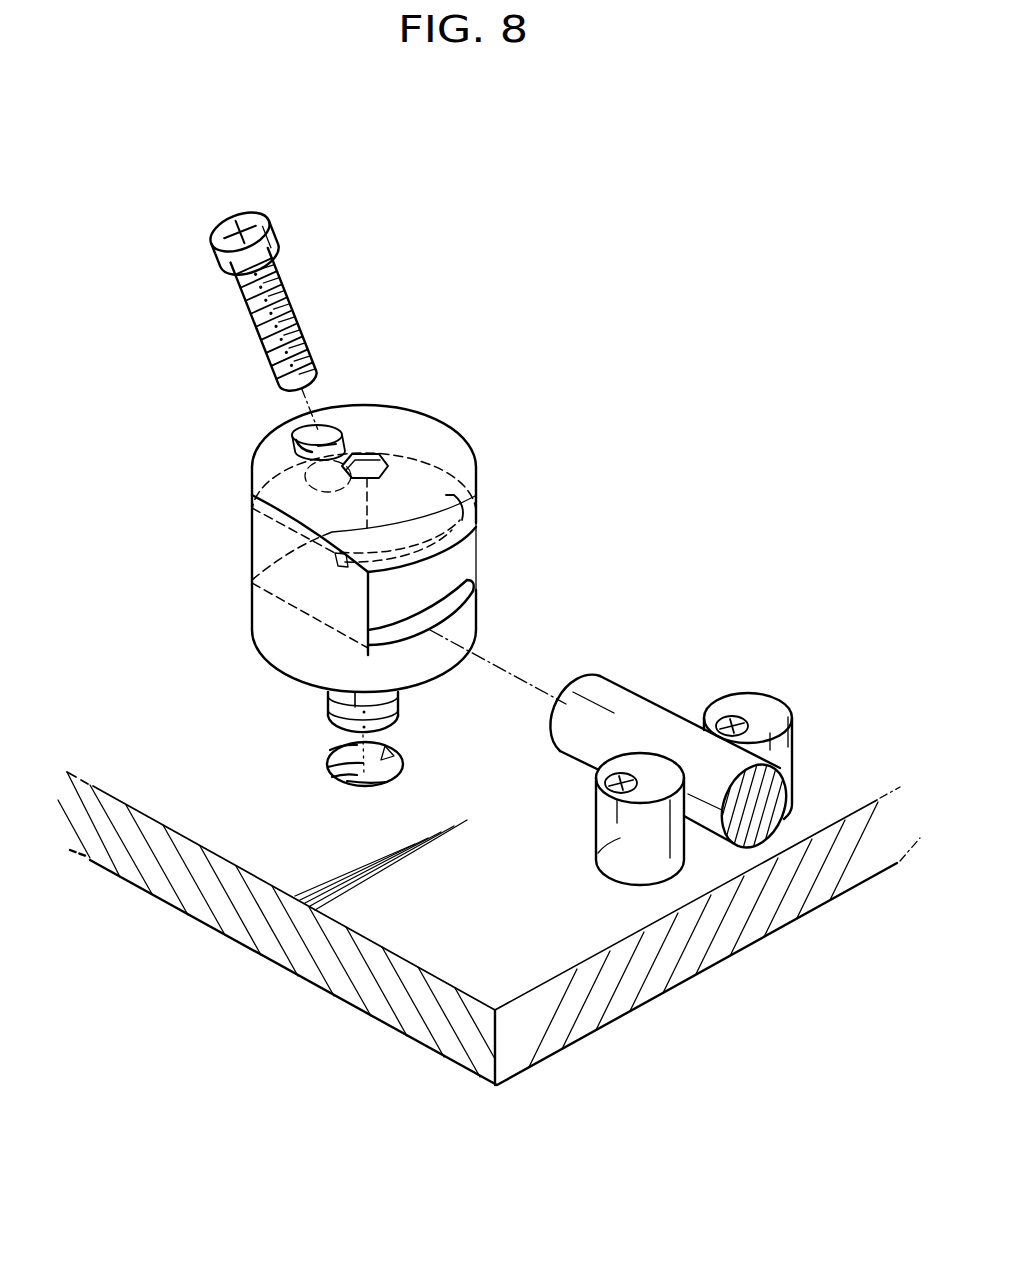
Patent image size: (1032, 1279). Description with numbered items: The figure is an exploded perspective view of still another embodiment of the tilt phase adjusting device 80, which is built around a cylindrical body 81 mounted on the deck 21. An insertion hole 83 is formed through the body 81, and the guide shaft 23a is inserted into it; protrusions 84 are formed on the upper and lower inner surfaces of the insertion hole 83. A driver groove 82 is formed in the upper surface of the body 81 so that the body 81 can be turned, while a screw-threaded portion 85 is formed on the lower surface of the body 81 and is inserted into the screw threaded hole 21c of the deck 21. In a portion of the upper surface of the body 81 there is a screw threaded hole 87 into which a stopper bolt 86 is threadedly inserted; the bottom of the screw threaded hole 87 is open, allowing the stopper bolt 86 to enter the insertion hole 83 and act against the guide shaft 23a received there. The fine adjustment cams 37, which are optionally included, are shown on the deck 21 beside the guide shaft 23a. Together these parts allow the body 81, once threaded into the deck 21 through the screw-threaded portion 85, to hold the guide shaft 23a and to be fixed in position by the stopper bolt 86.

The tilt phase adjusting device 80 is at (432, 268).
The cylindrical body 81 is at (443, 458).
The driver groove 82 is at (382, 447).
The insertion hole 83 is at (432, 597).
The protrusions 84 is at (478, 527).
The screw-threaded portion 85 is at (327, 702).
The stopper bolt 86 is at (288, 300).
The screw threaded hole 87 is at (320, 442).
The deck 21 is at (360, 970).
The screw threaded hole 21c is at (380, 763).
The guide shaft 23a is at (613, 718).
The fine adjustment cams 37 is at (782, 720).